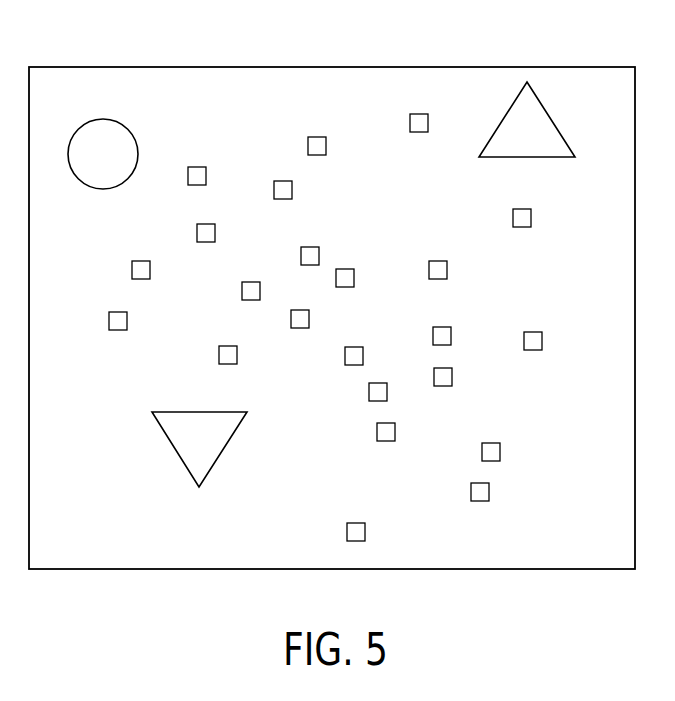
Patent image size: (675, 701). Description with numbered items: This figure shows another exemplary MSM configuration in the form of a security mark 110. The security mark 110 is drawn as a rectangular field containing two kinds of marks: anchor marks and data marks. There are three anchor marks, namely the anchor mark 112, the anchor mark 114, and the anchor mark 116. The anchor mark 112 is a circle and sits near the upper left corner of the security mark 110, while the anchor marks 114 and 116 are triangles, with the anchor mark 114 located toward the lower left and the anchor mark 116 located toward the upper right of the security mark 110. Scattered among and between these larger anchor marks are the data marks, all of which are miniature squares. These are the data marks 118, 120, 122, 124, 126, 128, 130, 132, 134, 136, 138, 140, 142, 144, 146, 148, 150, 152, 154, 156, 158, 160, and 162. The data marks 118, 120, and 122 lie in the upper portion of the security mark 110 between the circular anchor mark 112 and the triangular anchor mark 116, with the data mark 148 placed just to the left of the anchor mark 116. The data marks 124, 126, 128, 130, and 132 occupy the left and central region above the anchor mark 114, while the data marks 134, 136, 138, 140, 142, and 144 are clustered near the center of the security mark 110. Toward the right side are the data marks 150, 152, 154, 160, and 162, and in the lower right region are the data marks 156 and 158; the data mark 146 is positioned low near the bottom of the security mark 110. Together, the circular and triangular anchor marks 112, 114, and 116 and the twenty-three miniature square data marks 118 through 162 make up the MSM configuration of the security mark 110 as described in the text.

The security mark 110 is at (128, 67).
The anchor mark 112 is at (127, 129).
The anchor mark 114 is at (176, 452).
The anchor mark 116 is at (550, 118).
The data mark 118 is at (206, 174).
The data mark 120 is at (326, 144).
The data mark 122 is at (292, 188).
The data mark 124 is at (197, 233).
The data mark 126 is at (132, 270).
The data mark 128 is at (109, 321).
The data mark 130 is at (242, 291).
The data mark 132 is at (219, 355).
The data mark 134 is at (319, 254).
The data mark 136 is at (354, 276).
The data mark 138 is at (309, 317).
The data mark 140 is at (363, 354).
The data mark 142 is at (369, 392).
The data mark 144 is at (377, 432).
The data mark 146 is at (347, 532).
The data mark 148 is at (428, 121).
The data mark 150 is at (447, 268).
The data mark 152 is at (451, 334).
The data mark 154 is at (452, 375).
The data mark 156 is at (500, 450).
The data mark 158 is at (489, 490).
The data mark 160 is at (513, 218).
The data mark 162 is at (542, 339).